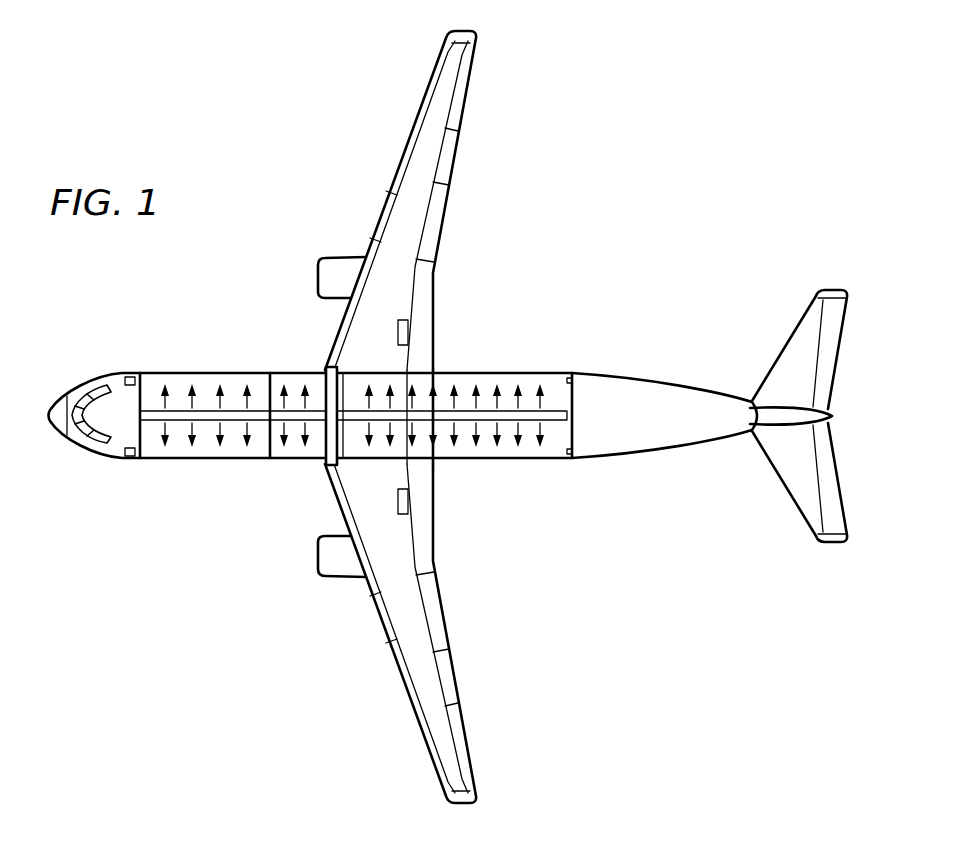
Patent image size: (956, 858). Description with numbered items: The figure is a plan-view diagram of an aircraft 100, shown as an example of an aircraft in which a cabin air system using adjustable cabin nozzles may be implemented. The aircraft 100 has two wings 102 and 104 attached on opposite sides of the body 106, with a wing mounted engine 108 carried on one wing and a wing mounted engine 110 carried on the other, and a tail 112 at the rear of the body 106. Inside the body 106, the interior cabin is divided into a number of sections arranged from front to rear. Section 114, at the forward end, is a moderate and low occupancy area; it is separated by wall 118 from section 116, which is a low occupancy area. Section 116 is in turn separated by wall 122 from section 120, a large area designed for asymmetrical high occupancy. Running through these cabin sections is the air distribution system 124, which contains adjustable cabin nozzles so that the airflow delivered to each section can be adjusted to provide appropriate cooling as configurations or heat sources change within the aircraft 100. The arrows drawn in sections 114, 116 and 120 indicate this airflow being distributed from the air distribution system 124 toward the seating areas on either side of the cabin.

The aircraft 100 is at (258, 152).
The wing 102 is at (392, 177).
The wing 104 is at (390, 654).
The body 106 is at (608, 374).
The wing mounted engine 108 is at (318, 272).
The wing mounted engine 110 is at (318, 559).
The tail 112 is at (835, 348).
The section 114 is at (206, 387).
The section 116 is at (302, 387).
The wall 118 is at (268, 452).
The section 120 is at (553, 385).
The wall 122 is at (344, 448).
The air distribution system 124 is at (573, 414).